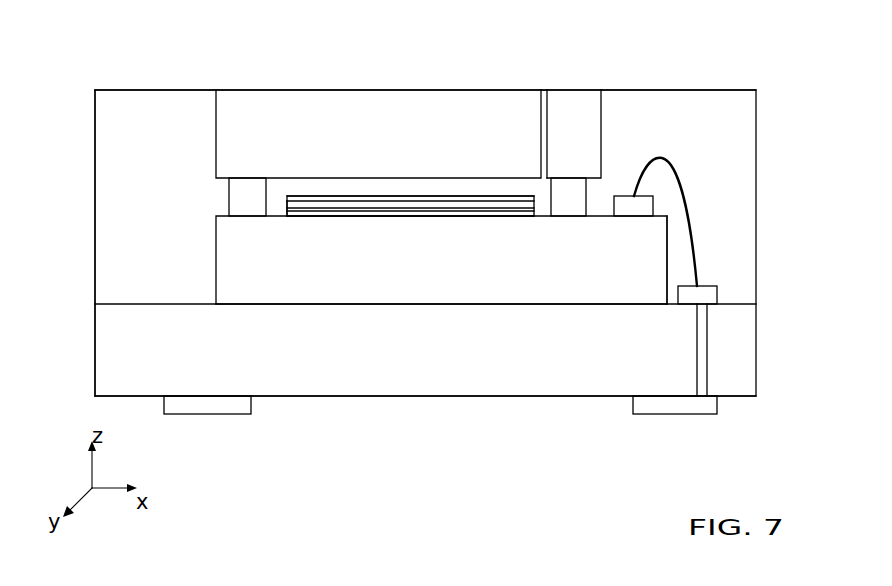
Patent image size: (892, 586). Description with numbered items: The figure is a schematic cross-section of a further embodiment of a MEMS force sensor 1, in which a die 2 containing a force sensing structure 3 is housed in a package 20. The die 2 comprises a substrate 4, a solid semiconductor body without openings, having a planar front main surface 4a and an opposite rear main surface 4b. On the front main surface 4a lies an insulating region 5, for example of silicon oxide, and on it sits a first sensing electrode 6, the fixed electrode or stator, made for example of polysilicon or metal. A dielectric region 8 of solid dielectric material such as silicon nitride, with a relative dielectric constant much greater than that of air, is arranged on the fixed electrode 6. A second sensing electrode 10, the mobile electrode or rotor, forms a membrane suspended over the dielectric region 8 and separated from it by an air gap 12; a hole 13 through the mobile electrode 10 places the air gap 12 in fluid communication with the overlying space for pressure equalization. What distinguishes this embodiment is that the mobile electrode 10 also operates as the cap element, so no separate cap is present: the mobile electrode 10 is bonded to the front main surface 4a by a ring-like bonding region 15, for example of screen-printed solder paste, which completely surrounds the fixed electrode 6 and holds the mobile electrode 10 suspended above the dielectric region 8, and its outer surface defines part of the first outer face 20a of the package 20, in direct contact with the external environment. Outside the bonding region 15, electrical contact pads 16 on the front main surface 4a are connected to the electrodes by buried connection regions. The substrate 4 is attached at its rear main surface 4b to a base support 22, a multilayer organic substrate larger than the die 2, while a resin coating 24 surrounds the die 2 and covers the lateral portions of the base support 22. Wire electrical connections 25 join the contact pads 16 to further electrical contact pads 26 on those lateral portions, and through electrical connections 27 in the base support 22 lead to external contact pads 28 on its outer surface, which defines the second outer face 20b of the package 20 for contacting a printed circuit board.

The MEMS force sensor 1 is at (783, 55).
The die 2 is at (667, 243).
The force sensing structure 3 is at (405, 235).
The substrate 4 is at (575, 288).
The front main surface 4a is at (596, 210).
The rear main surface 4b is at (513, 304).
The insulating region 5 is at (527, 214).
The first sensing electrode 6 is at (286, 205).
The dielectric region 8 is at (440, 200).
The second sensing electrode 10 is at (260, 97).
The air gap 12 is at (349, 184).
The hole 13 is at (543, 88).
The bonding region 15 is at (239, 203).
The electrical contact pads 16 is at (625, 207).
The package 20 is at (756, 253).
The first outer face 20a is at (685, 88).
The second outer face 20b is at (430, 397).
The base support 22 is at (108, 343).
The coating 24 is at (114, 131).
The wire electrical connections 25 is at (682, 170).
The further electrical contact pads 26 is at (707, 295).
The through electrical connections 27 is at (700, 350).
The external contact pads 28 is at (220, 406).